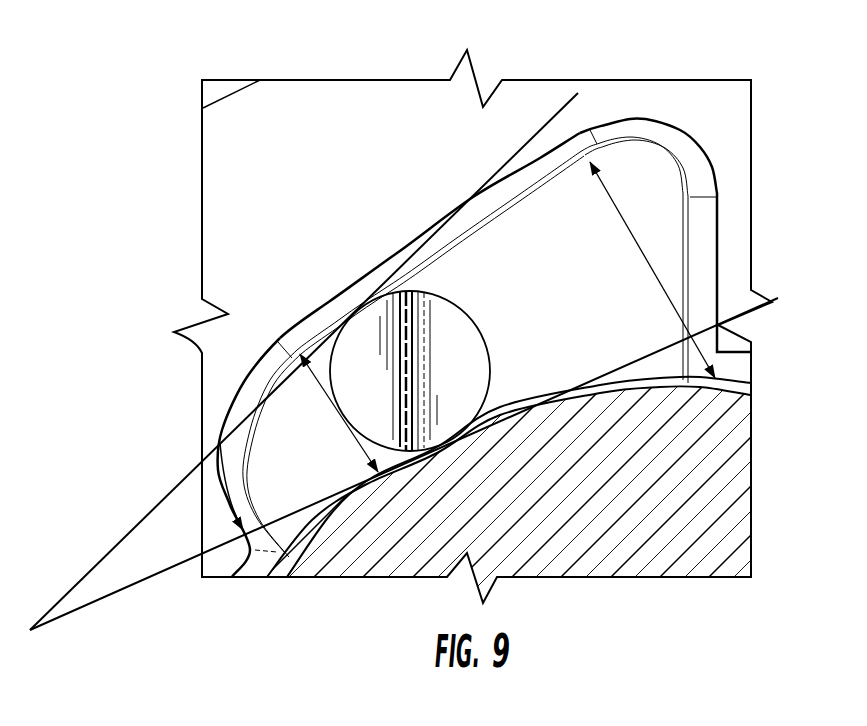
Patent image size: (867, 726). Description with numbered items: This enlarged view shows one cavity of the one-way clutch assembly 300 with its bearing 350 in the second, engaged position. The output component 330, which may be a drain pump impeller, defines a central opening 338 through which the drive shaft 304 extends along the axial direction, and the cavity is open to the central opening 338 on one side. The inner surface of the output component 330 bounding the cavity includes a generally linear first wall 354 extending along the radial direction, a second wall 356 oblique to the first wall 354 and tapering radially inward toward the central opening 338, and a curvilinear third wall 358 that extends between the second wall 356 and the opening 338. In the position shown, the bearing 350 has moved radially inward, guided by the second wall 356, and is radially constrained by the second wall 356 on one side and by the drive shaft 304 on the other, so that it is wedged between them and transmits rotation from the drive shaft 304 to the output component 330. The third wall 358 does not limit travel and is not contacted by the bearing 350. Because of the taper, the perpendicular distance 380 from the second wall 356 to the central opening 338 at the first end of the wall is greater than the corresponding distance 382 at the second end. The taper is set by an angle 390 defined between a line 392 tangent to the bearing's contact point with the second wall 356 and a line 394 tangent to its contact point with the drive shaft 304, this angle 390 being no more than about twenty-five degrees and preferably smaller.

The clutch assembly 300 is at (746, 65).
The drive shaft 304 is at (495, 522).
The output component 330 is at (226, 202).
The central opening 338 is at (750, 386).
The bearing 350 is at (382, 395).
The first wall 354 is at (718, 238).
The second wall 356 is at (470, 198).
The third wall 358 is at (211, 468).
The distance 380 is at (631, 235).
The distance 382 is at (351, 441).
The angle 390 is at (228, 494).
The line 392 is at (512, 153).
The line 394 is at (653, 350).